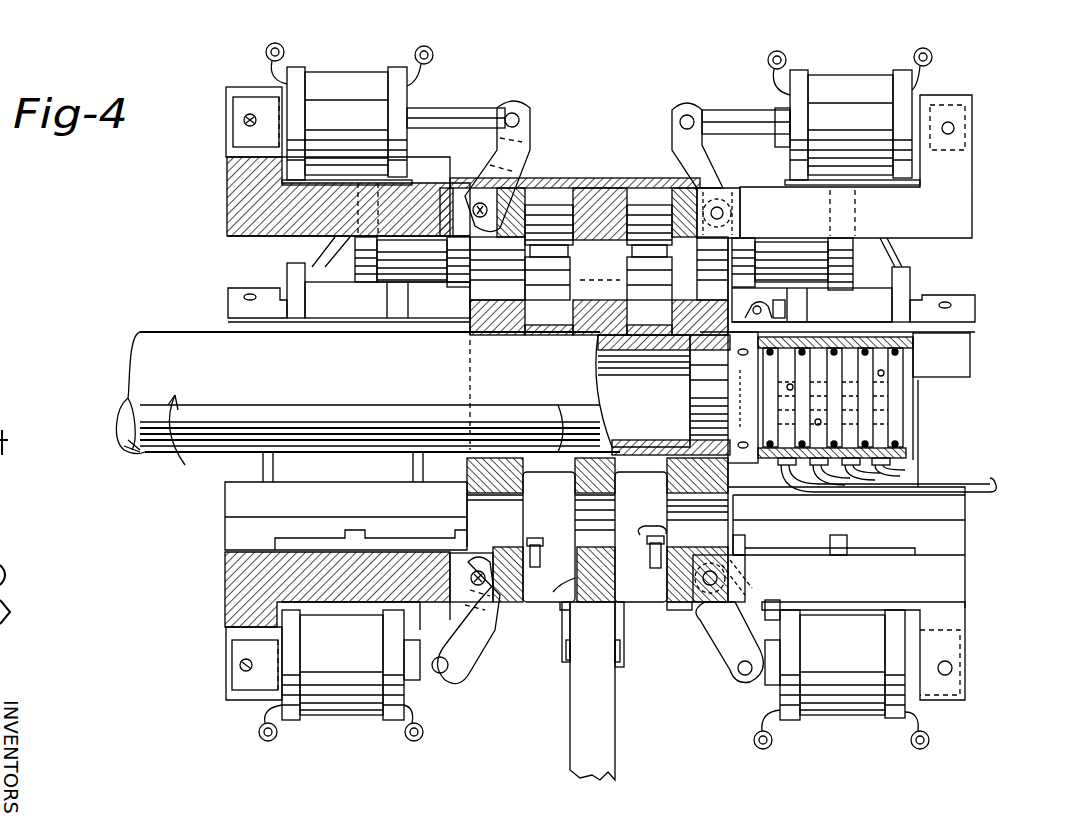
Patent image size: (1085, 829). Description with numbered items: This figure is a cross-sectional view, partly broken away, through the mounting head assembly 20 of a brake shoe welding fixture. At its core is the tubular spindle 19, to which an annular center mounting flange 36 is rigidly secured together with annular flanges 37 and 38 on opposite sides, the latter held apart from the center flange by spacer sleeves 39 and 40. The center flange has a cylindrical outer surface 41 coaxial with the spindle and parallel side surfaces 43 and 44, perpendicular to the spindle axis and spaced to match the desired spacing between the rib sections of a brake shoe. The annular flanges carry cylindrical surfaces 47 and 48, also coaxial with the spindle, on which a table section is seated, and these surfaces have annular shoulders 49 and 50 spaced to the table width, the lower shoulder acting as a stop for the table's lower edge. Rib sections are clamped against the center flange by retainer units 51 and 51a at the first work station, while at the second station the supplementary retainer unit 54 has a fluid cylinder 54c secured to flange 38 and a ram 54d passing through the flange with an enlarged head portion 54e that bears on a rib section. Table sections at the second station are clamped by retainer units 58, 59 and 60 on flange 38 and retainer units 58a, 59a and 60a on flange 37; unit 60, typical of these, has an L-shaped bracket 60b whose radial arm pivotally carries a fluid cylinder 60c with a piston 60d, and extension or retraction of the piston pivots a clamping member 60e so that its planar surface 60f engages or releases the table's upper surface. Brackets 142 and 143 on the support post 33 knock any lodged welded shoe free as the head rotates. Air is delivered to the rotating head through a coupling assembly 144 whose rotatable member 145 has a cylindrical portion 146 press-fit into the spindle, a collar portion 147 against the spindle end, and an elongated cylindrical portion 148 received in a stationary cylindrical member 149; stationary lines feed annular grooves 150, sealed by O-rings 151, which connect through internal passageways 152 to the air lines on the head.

The spindle 19 is at (178, 330).
The mounting head assembly 20 is at (184, 217).
The support post 33 is at (605, 715).
The center mounting flange 36 is at (570, 600).
The annular flange 37 is at (528, 476).
The annular flange 38 is at (655, 525).
The spacer sleeve 39 is at (548, 450).
The spacer sleeve 40 is at (655, 512).
The cylindrical outer surface 41 is at (592, 182).
The side surface 43 is at (555, 198).
The side surface 44 is at (634, 192).
The cylindrical surface 47 is at (572, 630).
The cylindrical surface 48 is at (672, 602).
The annular shoulder 49 is at (428, 690).
The annular shoulder 50 is at (705, 605).
The retainer unit 51 is at (838, 290).
The retainer unit 51a is at (372, 286).
The retainer unit 54 is at (805, 528).
The fluid cylinder 54c is at (850, 540).
The ram 54d is at (660, 568).
The enlarged head portion 54e is at (665, 532).
The retainer unit 58 is at (835, 710).
The retainer unit 58a is at (345, 712).
The retainer unit 59 is at (912, 285).
The retainer unit 59a is at (275, 270).
The retainer unit 60 is at (866, 66).
The retainer unit 60a is at (360, 72).
The L-shaped bracket 60b is at (965, 190).
The fluid cylinder 60c is at (880, 72).
The piston 60d is at (708, 104).
The clamping member 60e is at (675, 135).
The planar surface 60f is at (725, 200).
The bracket 142 is at (562, 665).
The bracket 143 is at (625, 655).
The coupling assembly 144 is at (930, 409).
The rotatable member 145 is at (905, 372).
The cylindrical portion 146 is at (690, 430).
The collar portion 147 is at (745, 478).
The elongated cylindrical portion 148 is at (900, 430).
The cylindrical member 149 is at (905, 455).
The annular groove 150 is at (888, 398).
The O-ring 151 is at (905, 353).
The internal passageway 152 is at (728, 385).